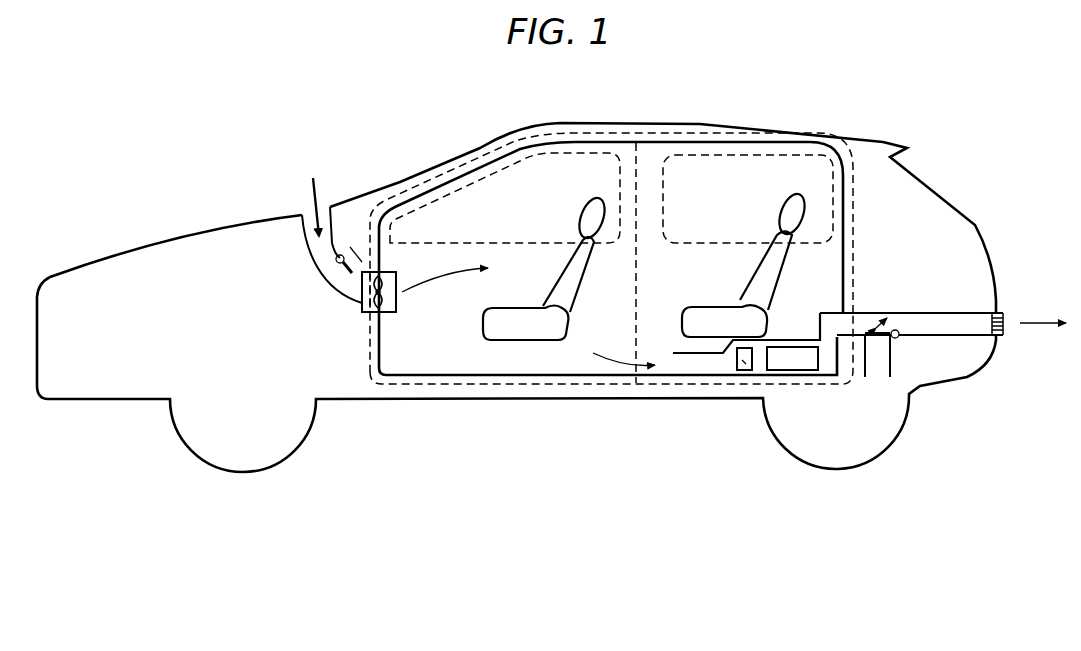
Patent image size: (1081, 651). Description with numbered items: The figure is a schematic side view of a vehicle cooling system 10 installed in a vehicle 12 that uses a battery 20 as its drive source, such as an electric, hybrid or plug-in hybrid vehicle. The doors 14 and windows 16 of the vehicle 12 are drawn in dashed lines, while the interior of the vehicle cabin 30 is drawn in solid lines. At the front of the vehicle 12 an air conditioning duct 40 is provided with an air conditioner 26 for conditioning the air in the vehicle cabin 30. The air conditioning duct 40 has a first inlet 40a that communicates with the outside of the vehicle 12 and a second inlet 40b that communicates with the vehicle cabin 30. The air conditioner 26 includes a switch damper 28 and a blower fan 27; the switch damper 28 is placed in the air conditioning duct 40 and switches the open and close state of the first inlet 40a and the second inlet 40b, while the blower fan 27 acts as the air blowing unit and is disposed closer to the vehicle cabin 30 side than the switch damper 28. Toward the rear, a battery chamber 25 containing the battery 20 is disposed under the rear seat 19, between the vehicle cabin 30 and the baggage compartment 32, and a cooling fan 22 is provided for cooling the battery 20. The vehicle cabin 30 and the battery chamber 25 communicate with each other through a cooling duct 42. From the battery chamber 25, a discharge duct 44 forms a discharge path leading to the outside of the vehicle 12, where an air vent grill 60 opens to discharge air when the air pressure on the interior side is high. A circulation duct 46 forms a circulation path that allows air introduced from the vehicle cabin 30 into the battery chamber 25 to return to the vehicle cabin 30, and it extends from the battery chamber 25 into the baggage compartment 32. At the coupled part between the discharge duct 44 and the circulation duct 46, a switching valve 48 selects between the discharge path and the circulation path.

The vehicle cooling system 10 is at (947, 148).
The vehicle 12 is at (202, 230).
The doors 14 is at (477, 387).
The windows 16 is at (495, 160).
The rear seat 19 is at (778, 278).
The battery 20 is at (787, 360).
The cooling fan 22 is at (745, 366).
The battery chamber 25 is at (827, 363).
The air conditioner 26 is at (395, 310).
The blower fan 27 is at (370, 307).
The switch damper 28 is at (338, 271).
The vehicle cabin 30 is at (592, 300).
The baggage compartment 32 is at (925, 250).
The air conditioning duct 40 is at (307, 247).
The first inlet 40a is at (302, 212).
The second inlet 40b is at (362, 262).
The cooling duct 42 is at (695, 355).
The discharge duct 44 is at (950, 337).
The circulation duct 46 is at (893, 362).
The switching valve 48 is at (872, 330).
The air vent grill 60 is at (1007, 335).